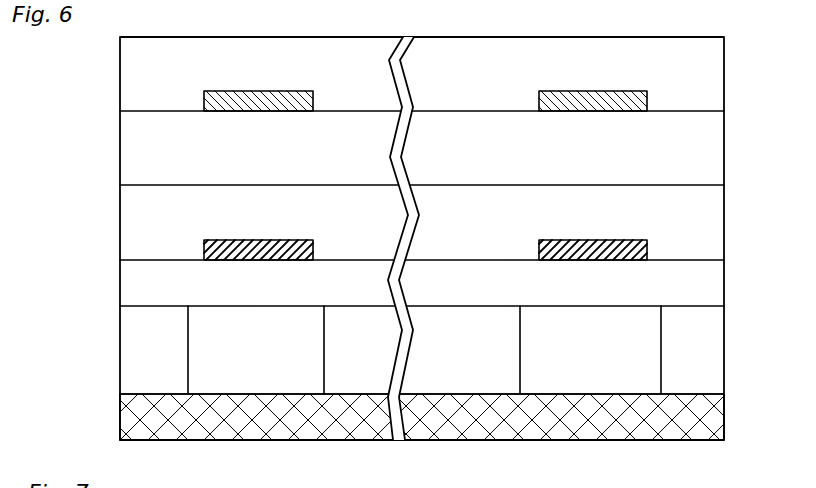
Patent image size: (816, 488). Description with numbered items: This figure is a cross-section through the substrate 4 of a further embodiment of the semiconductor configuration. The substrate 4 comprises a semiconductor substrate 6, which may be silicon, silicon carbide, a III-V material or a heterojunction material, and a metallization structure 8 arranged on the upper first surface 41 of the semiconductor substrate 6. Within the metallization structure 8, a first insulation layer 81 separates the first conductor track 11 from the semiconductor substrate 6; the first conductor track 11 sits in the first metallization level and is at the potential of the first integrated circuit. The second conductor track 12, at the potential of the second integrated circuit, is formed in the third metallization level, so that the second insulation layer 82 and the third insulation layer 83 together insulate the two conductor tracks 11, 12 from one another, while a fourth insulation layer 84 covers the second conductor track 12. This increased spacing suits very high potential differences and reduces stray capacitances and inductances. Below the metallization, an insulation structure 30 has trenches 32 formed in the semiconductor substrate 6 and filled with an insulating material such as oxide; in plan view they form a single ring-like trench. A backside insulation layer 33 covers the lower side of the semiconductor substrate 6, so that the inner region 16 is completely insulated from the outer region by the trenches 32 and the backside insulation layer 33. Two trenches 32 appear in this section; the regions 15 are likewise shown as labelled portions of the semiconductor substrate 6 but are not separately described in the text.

The substrate 4 is at (741, 38).
The metallization structure 8 is at (386, 173).
The fourth insulation layer 84 is at (125, 75).
The third insulation layer 83 is at (125, 150).
The second insulation layer 82 is at (125, 214).
The first insulation layer 81 is at (402, 287).
The second conductor track 12 is at (204, 100).
The first conductor track 11 is at (204, 248).
The semiconductor substrate 6 is at (395, 379).
The insulation structure 30 is at (174, 325).
The trenches 32 is at (317, 350).
The first surface 41 is at (490, 306).
The backside insulation layer 33 is at (125, 416).
The cavity 15 is at (152, 392).
The inner region 16 is at (467, 391).